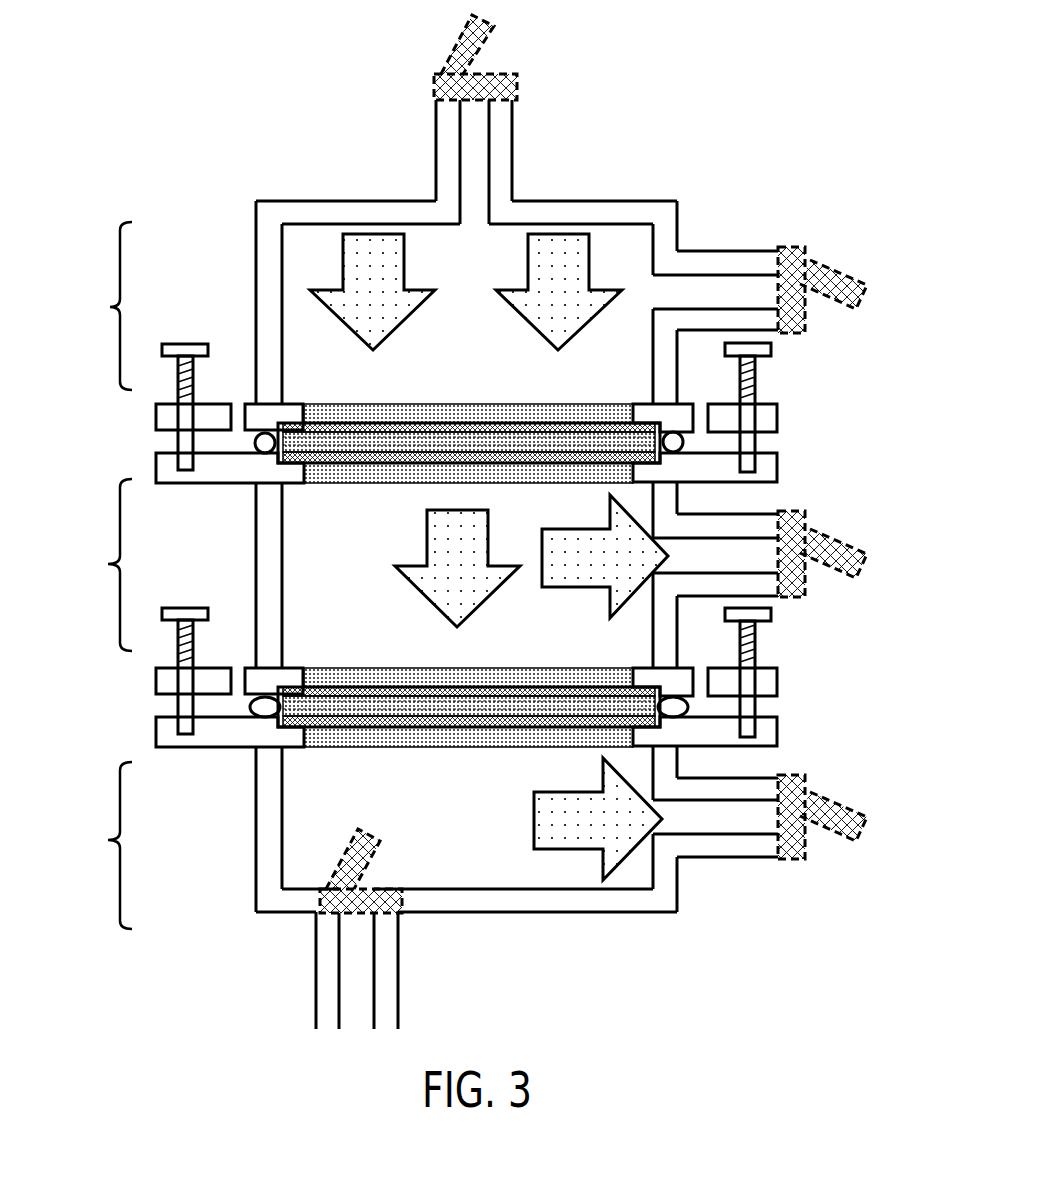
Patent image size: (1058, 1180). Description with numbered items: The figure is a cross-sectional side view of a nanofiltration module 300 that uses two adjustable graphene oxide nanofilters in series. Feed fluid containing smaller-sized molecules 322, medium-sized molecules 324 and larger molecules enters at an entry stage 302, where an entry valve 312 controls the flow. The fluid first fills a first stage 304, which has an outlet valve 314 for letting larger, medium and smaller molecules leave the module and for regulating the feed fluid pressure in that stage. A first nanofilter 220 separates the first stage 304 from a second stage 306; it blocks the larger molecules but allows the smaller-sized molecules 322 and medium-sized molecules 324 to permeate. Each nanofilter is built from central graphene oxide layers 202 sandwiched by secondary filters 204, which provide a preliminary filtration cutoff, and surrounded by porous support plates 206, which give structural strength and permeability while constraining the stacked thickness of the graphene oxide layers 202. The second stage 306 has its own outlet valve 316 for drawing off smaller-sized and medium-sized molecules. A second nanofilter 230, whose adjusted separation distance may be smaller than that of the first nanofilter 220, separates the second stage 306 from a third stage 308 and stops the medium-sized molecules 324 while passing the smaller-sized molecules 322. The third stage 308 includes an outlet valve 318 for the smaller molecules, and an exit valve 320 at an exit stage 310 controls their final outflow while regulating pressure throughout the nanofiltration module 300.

The nanofiltration module 300 is at (715, 116).
The entry stage 302 is at (415, 87).
The first stage 304 is at (102, 306).
The second stage 306 is at (102, 565).
The third stage 308 is at (102, 845).
The exit stage 310 is at (273, 922).
The entry valve 312 is at (517, 88).
The outlet valve 314 is at (805, 327).
The outlet valve 316 is at (808, 590).
The outlet valve 318 is at (808, 852).
The exit valve 320 is at (399, 887).
The smaller-sized molecules 322 is at (393, 273).
The medium-sized molecules 324 is at (538, 268).
The first nanofilter 220 is at (441, 409).
The second nanofilter 230 is at (156, 663).
The graphene oxide layers 202 is at (385, 444).
The secondary filters 204 is at (443, 429).
The porous support plates 206 is at (496, 411).